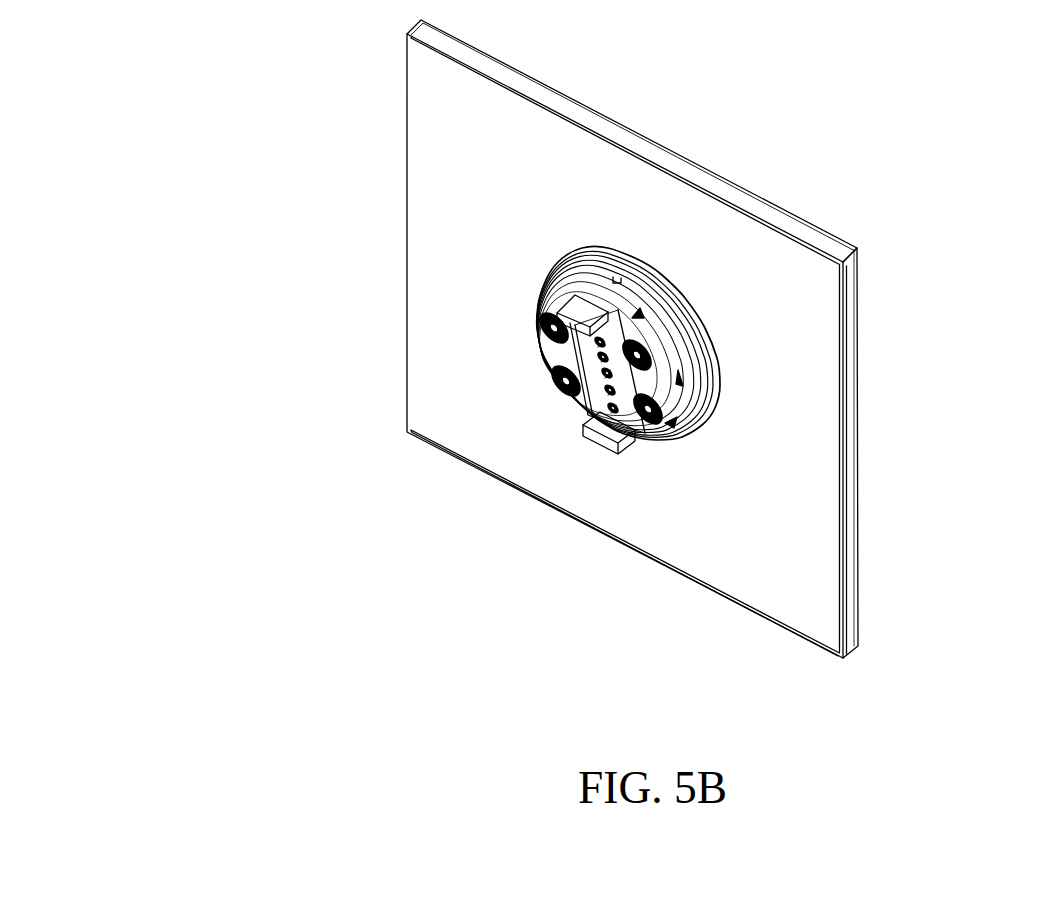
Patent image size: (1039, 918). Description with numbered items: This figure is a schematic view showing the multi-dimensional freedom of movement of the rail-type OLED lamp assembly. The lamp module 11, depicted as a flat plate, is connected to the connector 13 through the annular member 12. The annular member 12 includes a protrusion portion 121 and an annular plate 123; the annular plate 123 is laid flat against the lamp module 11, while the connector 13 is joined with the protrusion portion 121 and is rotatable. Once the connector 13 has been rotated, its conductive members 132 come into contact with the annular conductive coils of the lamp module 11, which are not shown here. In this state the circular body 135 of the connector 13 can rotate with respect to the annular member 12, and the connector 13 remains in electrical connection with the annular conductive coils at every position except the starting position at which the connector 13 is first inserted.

The lamp module 11 is at (781, 204).
The annular member 12 is at (641, 242).
The protrusion portion 121 is at (607, 275).
The annular plate 123 is at (593, 261).
The connector 13 is at (780, 405).
The conductive members 132 is at (615, 410).
The circular body 135 is at (678, 397).